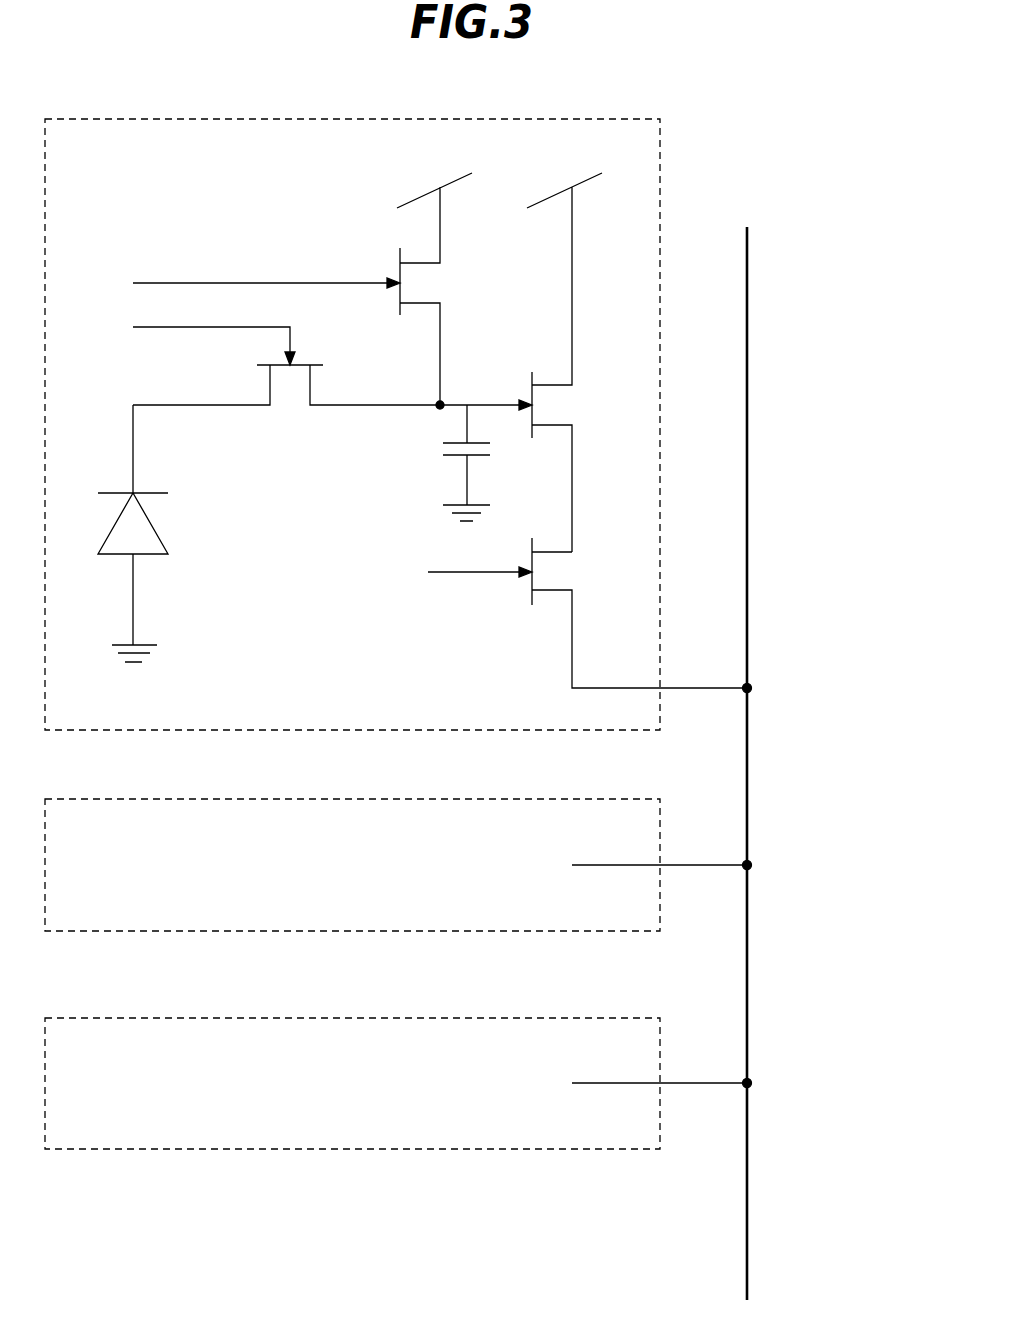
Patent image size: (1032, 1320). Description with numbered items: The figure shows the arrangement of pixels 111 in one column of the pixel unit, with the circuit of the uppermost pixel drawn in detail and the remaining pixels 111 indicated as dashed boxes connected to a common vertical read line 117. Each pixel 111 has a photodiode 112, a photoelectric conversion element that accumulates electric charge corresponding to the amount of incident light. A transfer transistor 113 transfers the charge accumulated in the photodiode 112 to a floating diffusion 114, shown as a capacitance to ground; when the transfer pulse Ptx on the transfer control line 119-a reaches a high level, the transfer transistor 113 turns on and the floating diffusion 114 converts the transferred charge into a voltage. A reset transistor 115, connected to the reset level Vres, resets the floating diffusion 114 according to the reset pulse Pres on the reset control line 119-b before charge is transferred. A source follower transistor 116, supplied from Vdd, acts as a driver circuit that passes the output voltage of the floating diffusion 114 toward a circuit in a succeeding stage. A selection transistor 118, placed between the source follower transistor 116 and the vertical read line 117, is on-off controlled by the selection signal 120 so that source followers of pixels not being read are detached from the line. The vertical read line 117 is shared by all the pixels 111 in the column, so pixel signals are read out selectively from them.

The pixel 111 is at (356, 119).
The photodiode 112 is at (168, 554).
The transfer transistor 113 is at (291, 385).
The floating diffusion 114 is at (444, 446).
The reset transistor 115 is at (420, 285).
The source follower transistor 116 is at (553, 406).
The vertical read line 117 is at (748, 550).
The selection transistor 118 is at (553, 573).
The transfer control line 119-a is at (186, 329).
The reset control line 119-b is at (238, 271).
The selection signal 120 is at (453, 559).